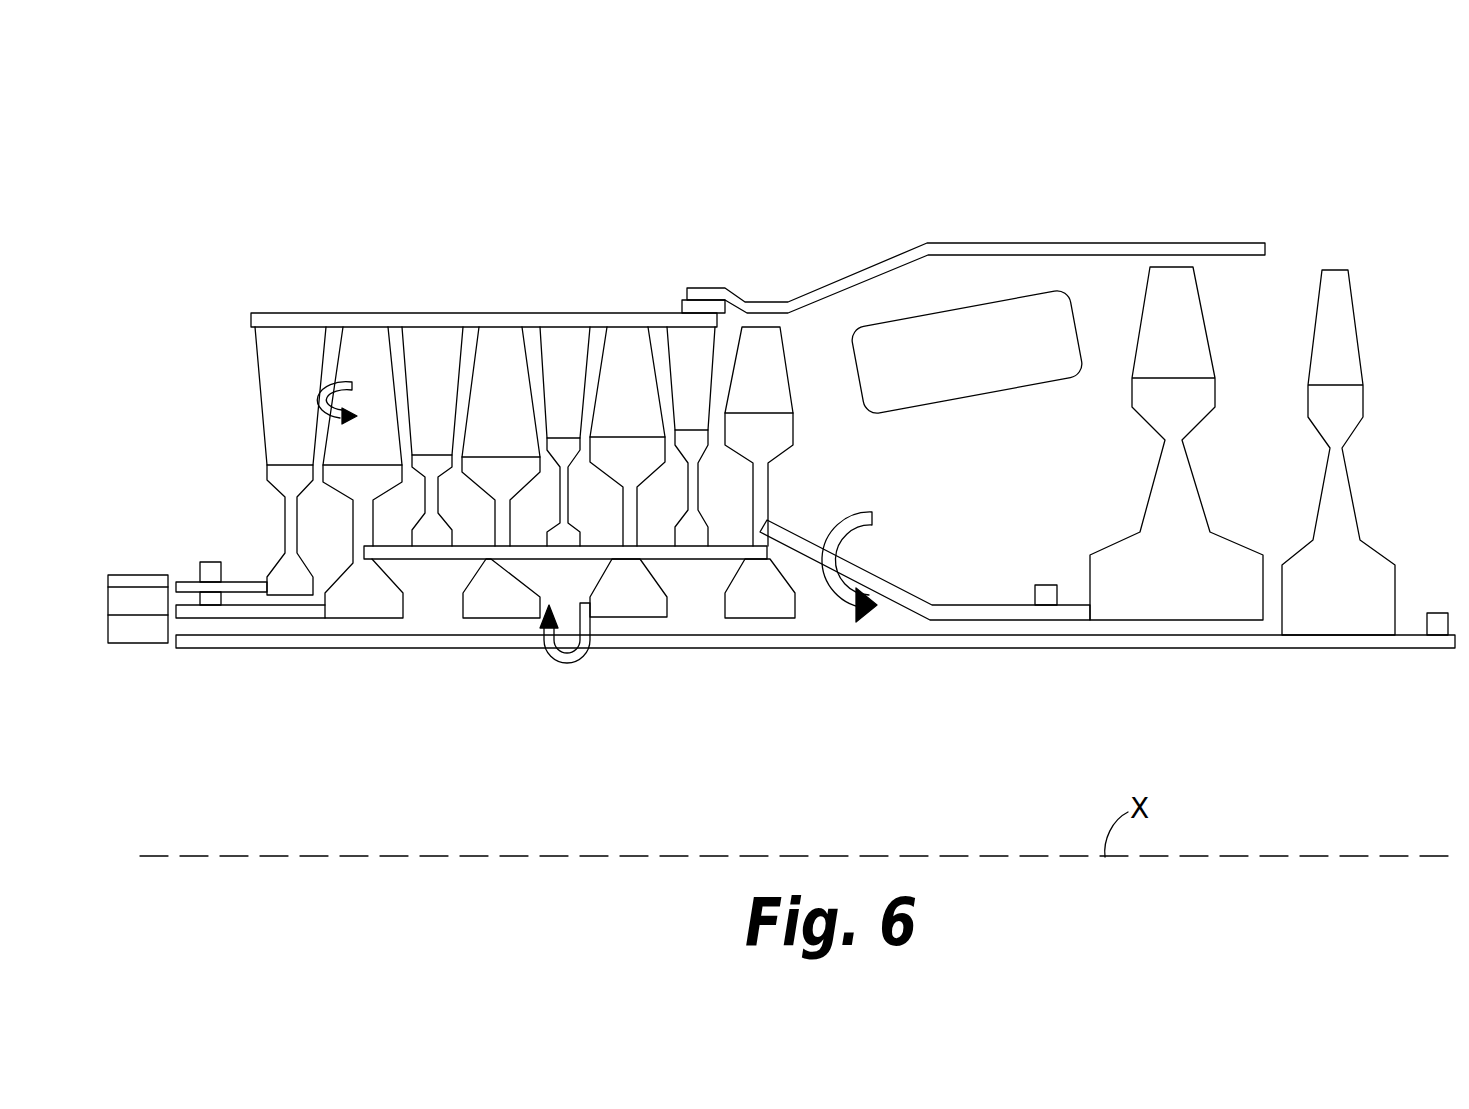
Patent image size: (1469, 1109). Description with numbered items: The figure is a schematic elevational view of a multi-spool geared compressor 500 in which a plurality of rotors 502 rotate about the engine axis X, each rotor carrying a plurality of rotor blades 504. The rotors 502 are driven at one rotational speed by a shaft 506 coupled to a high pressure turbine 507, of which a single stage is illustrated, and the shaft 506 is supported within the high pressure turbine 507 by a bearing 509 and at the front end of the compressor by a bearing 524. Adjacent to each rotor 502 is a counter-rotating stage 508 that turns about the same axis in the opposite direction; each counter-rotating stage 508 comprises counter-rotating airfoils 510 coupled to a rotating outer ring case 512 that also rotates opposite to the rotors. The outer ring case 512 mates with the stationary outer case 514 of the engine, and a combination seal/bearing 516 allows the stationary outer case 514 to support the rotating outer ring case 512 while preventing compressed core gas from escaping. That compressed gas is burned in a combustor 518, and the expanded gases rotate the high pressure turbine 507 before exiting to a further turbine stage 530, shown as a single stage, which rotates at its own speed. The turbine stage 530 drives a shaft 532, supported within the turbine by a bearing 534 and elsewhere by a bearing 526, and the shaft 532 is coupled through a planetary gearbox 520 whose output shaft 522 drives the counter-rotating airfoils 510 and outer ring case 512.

The multi-spool geared compressor 500 is at (1100, 87).
The rotor 502 is at (733, 594).
The rotor blade 504 is at (367, 350).
The shaft 506 is at (883, 576).
The high pressure turbine 507 is at (1205, 302).
The counter-rotating stage 508 is at (268, 486).
The bearing 509 is at (1046, 584).
The counter-rotating airfoil 510 is at (256, 350).
The rotating outer ring case 512 is at (489, 311).
The stationary outer case 514 is at (714, 282).
The combination seal/bearing 516 is at (681, 303).
The combustor 518 is at (986, 336).
The planetary gearbox 520 is at (140, 652).
The output shaft 522 is at (243, 581).
The bearing 524 is at (210, 606).
The bearing 526 is at (200, 551).
The turbine stage 530 is at (1364, 311).
The shaft 532 is at (1203, 641).
The bearing 534 is at (1438, 610).